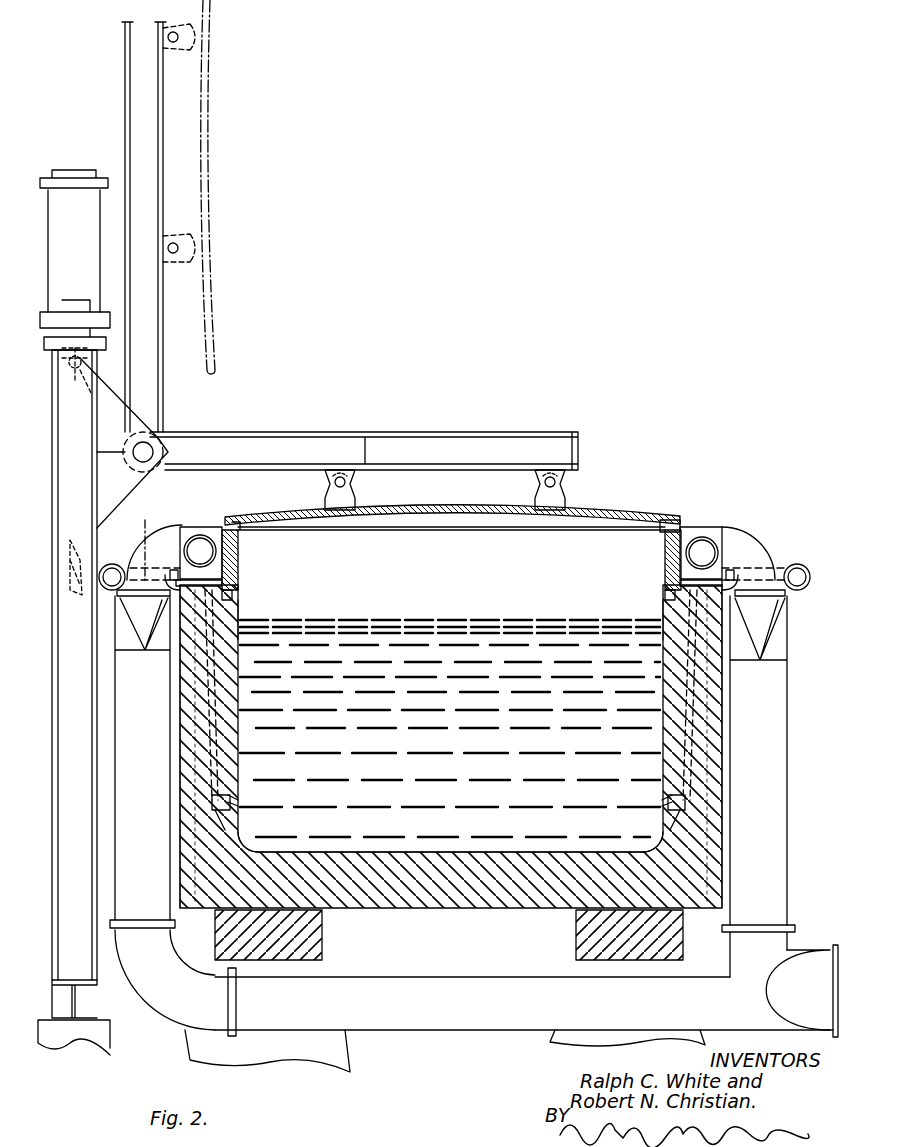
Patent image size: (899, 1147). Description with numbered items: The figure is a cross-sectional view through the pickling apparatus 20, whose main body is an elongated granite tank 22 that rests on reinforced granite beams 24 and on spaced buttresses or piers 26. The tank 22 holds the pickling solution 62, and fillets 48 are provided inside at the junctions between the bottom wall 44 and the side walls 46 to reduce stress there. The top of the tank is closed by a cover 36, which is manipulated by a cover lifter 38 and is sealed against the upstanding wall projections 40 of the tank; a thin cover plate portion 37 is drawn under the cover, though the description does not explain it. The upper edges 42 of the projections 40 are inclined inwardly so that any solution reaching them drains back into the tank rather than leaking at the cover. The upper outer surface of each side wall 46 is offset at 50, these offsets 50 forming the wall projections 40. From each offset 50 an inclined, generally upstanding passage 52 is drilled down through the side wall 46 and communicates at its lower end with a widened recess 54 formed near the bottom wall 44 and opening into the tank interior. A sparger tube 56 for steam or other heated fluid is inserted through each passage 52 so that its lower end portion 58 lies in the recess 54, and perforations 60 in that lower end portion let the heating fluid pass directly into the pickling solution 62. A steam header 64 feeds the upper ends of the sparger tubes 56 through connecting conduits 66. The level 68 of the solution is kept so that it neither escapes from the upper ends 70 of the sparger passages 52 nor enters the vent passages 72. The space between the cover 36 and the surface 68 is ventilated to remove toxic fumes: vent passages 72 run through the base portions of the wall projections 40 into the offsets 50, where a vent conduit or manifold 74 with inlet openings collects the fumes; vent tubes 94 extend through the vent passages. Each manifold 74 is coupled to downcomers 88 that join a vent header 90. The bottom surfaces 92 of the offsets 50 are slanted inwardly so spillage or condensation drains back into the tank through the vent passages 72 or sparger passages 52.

The pickling apparatus 20 is at (662, 500).
The granite tank 22 is at (770, 727).
The reinforced granite beams 24 is at (322, 935).
The buttresses or piers 26 is at (322, 972).
The cover 36 is at (215, 290).
The cover plate 37 is at (268, 528).
The cover lifter 38 is at (52, 430).
The upstanding wall projections 40 is at (238, 548).
The upper edges of wall projections 42 is at (683, 525).
The bottom wall 44 is at (445, 905).
The side walls 46 is at (195, 712).
The fillets 48 is at (228, 848).
The offsets 50 is at (207, 527).
The inclined passages 52 is at (215, 690).
The widened recess 54 is at (230, 800).
The sparger tube 56 is at (200, 740).
The lower end portion of sparger tube 58 is at (225, 840).
The perforations or openings 60 is at (238, 800).
The pickling solution 62 is at (463, 705).
The steam header 64 is at (112, 564).
The connecting conduits 66 is at (795, 546).
The level of pickling solution 68 is at (397, 618).
The upper ends of sparger passages 70 is at (240, 636).
The vent passages 72 is at (240, 582).
The vent conduit 74 is at (183, 525).
The downcomers 88 is at (115, 778).
The vent header 90 is at (812, 945).
The bottom surfaces of offsets 92 is at (142, 755).
The vent tubes 94 is at (240, 598).